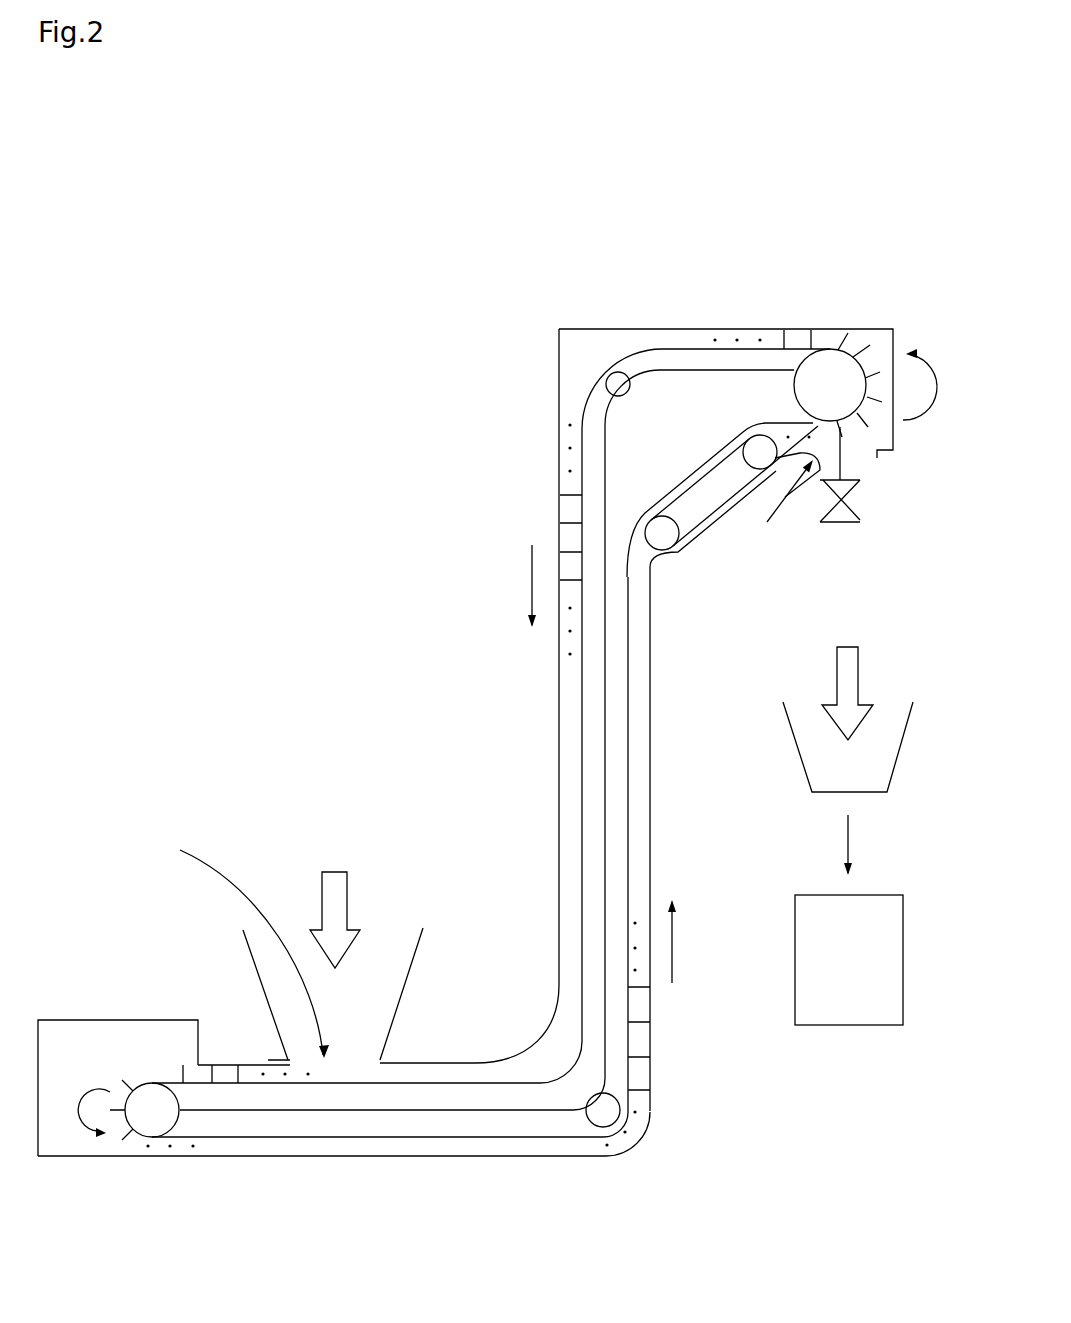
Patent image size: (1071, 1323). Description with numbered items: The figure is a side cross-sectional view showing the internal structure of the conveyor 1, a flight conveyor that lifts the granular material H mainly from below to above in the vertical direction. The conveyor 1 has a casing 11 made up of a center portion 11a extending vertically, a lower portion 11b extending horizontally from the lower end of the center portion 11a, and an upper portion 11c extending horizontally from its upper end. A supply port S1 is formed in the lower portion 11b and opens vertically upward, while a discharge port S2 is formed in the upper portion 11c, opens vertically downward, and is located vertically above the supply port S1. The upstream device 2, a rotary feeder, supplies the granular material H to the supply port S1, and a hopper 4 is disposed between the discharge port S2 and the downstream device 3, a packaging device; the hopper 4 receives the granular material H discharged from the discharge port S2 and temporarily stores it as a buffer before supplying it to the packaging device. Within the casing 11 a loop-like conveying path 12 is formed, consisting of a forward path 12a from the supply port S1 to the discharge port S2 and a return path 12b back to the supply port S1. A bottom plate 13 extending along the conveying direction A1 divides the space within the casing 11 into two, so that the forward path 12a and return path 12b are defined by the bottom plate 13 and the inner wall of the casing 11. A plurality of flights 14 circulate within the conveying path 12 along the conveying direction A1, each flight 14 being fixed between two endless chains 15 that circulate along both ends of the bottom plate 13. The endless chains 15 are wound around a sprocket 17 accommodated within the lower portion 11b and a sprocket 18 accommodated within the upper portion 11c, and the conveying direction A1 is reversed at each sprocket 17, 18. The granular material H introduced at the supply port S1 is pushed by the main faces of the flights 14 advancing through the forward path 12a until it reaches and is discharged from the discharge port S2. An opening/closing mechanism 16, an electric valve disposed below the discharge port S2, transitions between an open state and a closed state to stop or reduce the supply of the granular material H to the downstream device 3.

The conveyor 1 is at (158, 112).
The upstream device 2 is at (253, 977).
The downstream device 3 is at (797, 923).
The hopper 4 is at (795, 740).
The casing 11 is at (571, 328).
The center portion 11a is at (650, 817).
The lower portion 11b is at (430, 1160).
The upper portion 11c is at (730, 328).
The conveying path 12 is at (440, 766).
The forward path 12a is at (638, 853).
The return path 12b is at (568, 877).
The bottom plate 13 is at (605, 747).
The flight 14 is at (576, 493).
The endless chain 15 is at (640, 1128).
The opening/closing mechanism 16 is at (840, 522).
The sprocket 17 is at (146, 1138).
The sprocket 18 is at (842, 342).
The supply port S1 is at (236, 946).
The discharge port S2 is at (800, 468).
The conveying direction A1 is at (602, 764).
The granular material H is at (598, 790).